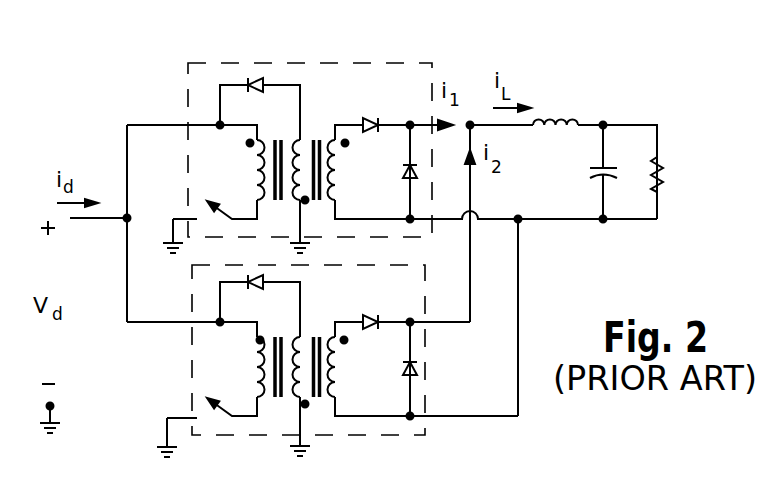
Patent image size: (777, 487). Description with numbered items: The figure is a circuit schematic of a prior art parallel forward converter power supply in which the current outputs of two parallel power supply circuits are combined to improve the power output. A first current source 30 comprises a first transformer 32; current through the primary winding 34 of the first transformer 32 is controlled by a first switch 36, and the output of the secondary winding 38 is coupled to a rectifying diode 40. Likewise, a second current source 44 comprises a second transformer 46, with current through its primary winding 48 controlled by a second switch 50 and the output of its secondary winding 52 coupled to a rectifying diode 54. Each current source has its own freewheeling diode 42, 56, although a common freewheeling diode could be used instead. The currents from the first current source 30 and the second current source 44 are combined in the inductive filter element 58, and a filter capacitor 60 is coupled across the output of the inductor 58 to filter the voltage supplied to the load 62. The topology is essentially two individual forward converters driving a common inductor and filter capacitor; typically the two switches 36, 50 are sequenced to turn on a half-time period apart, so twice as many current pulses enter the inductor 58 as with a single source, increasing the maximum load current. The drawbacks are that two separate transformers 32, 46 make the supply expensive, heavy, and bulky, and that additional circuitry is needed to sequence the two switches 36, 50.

The first current source 30 is at (308, 63).
The first transformer 32 is at (302, 148).
The primary winding 34 is at (257, 158).
The first switch 36 is at (229, 213).
The secondary winding 38 is at (339, 157).
The rectifying diode 40 is at (378, 117).
The freewheeling diode 42 is at (405, 173).
The second current source 44 is at (340, 438).
The second transformer 46 is at (300, 338).
The primary winding 48 is at (259, 356).
The second switch 50 is at (222, 421).
The secondary winding 52 is at (339, 354).
The rectifying diode 54 is at (376, 315).
The freewheeling diode 56 is at (421, 366).
The inductive filter element 58 is at (570, 115).
The filter capacitor 60 is at (590, 168).
The load 62 is at (660, 160).